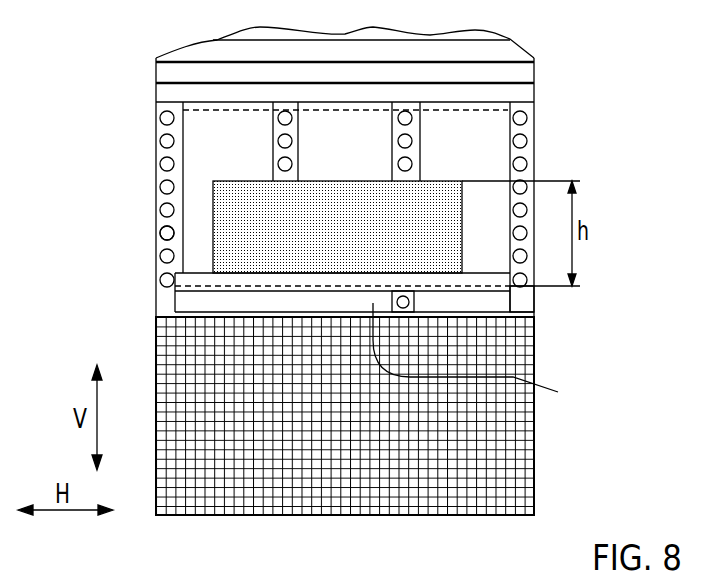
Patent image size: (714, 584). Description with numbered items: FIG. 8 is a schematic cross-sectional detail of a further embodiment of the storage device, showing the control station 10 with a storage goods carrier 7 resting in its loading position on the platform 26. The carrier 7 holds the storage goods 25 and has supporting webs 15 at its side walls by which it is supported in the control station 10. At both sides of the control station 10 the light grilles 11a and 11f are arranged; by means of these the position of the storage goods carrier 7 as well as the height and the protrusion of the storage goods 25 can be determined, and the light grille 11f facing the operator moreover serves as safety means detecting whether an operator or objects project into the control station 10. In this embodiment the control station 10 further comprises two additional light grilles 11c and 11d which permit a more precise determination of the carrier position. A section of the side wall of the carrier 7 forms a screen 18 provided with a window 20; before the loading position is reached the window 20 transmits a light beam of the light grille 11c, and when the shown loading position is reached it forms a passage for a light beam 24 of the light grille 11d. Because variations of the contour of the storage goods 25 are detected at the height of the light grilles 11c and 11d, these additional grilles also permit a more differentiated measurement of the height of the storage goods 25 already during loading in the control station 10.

The control station 10 is at (553, 124).
The light grille 11a is at (160, 123).
The light grille 11c is at (293, 133).
The light grille 11d is at (413, 133).
The light grille 11f is at (518, 303).
The storage goods carrier 7 is at (192, 280).
The supporting web 15 is at (193, 293).
The screen 18 is at (480, 355).
The window 20 is at (413, 305).
The light beam 24 is at (162, 225).
The storage goods 25 is at (360, 241).
The platform 26 is at (515, 427).